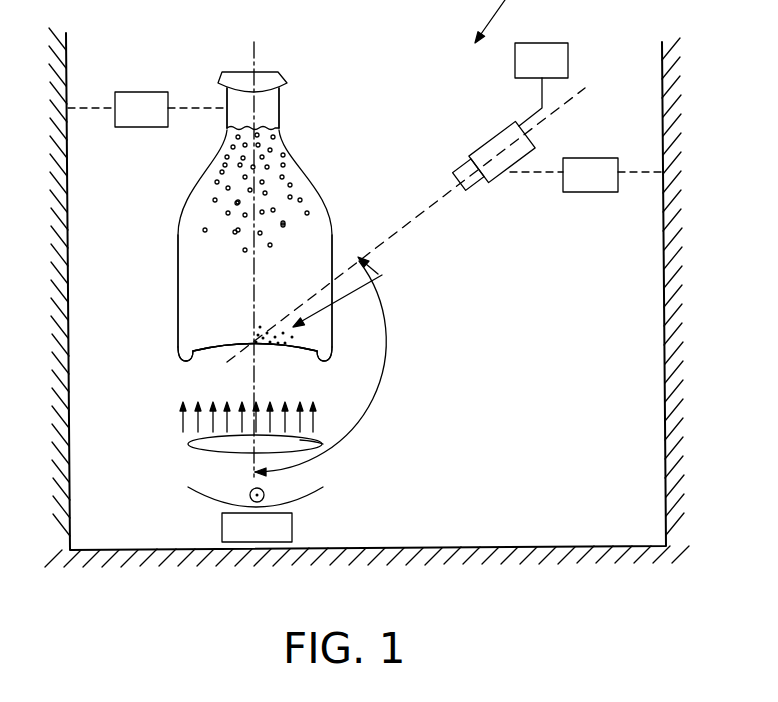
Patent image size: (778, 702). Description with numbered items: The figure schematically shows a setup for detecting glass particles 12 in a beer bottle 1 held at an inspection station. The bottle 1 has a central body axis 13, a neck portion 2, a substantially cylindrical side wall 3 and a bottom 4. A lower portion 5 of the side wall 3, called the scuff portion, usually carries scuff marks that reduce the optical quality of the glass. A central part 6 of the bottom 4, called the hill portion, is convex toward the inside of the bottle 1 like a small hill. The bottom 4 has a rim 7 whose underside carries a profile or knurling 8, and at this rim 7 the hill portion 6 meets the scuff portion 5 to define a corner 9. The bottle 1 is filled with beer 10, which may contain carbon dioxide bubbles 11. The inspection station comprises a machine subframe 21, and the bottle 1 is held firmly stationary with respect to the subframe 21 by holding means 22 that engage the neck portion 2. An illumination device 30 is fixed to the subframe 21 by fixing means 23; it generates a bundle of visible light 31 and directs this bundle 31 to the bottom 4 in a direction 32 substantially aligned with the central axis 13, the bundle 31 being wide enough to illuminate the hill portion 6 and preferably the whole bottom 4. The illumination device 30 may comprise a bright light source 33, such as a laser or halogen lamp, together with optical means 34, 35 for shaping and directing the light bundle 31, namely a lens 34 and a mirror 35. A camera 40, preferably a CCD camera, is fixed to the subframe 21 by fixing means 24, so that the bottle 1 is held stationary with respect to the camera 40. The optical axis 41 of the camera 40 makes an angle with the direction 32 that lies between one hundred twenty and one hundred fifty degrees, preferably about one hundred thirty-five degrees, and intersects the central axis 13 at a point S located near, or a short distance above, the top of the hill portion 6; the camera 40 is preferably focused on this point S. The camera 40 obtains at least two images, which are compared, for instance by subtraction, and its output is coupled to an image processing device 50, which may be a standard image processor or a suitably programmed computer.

The beer bottle 1 is at (389, 126).
The neck portion 2 is at (279, 104).
The side wall 3 is at (178, 260).
The bottom 4 is at (207, 350).
The lower portion of the side wall 5 is at (340, 307).
The central part of the bottom 6 is at (215, 338).
The rim 7 is at (186, 357).
The knurling 8 is at (317, 360).
The corner 9 is at (187, 356).
The beer 10 is at (178, 229).
The CO2 bubbles 11 is at (215, 181).
The glass particles 12 is at (353, 292).
The central body axis 13 is at (254, 58).
The machine subframe 21 is at (67, 58).
The holding means 22 is at (156, 124).
The fixing means 23 is at (272, 540).
The fixing means 24 is at (605, 189).
The illumination device 30 is at (163, 490).
The bundle of visible light 31 is at (183, 420).
The direction of the bundle 32 is at (257, 423).
The light source 33 is at (263, 491).
The lens 34 is at (323, 443).
The mirror 35 is at (325, 487).
The camera 40 is at (490, 142).
The optical axis 41 is at (430, 207).
The image processing device 50 is at (556, 74).
The intersection point S is at (256, 342).